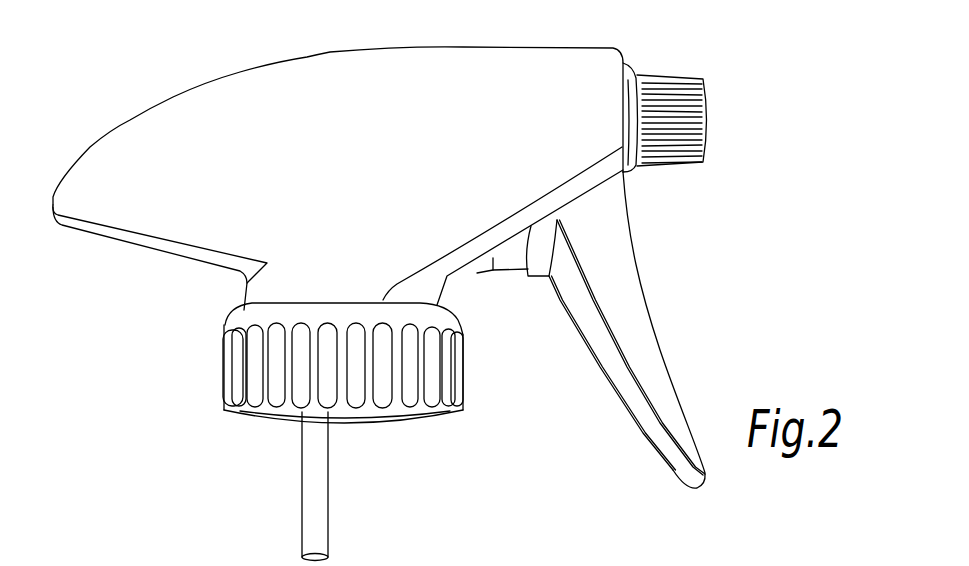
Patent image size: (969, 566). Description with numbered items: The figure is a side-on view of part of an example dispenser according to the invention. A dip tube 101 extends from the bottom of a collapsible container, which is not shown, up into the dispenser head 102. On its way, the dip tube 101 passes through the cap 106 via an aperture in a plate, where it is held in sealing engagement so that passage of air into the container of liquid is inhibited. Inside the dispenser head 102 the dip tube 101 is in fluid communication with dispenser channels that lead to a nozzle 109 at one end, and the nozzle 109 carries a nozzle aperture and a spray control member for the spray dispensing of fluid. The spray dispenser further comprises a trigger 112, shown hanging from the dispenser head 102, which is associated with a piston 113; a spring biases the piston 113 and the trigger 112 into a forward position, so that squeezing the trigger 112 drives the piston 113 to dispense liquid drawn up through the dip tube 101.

The dip tube 101 is at (307, 528).
The dispenser head 102 is at (362, 72).
The cap 106 is at (420, 405).
The nozzle 109 is at (680, 82).
The trigger 112 is at (652, 382).
The piston 113 is at (513, 257).